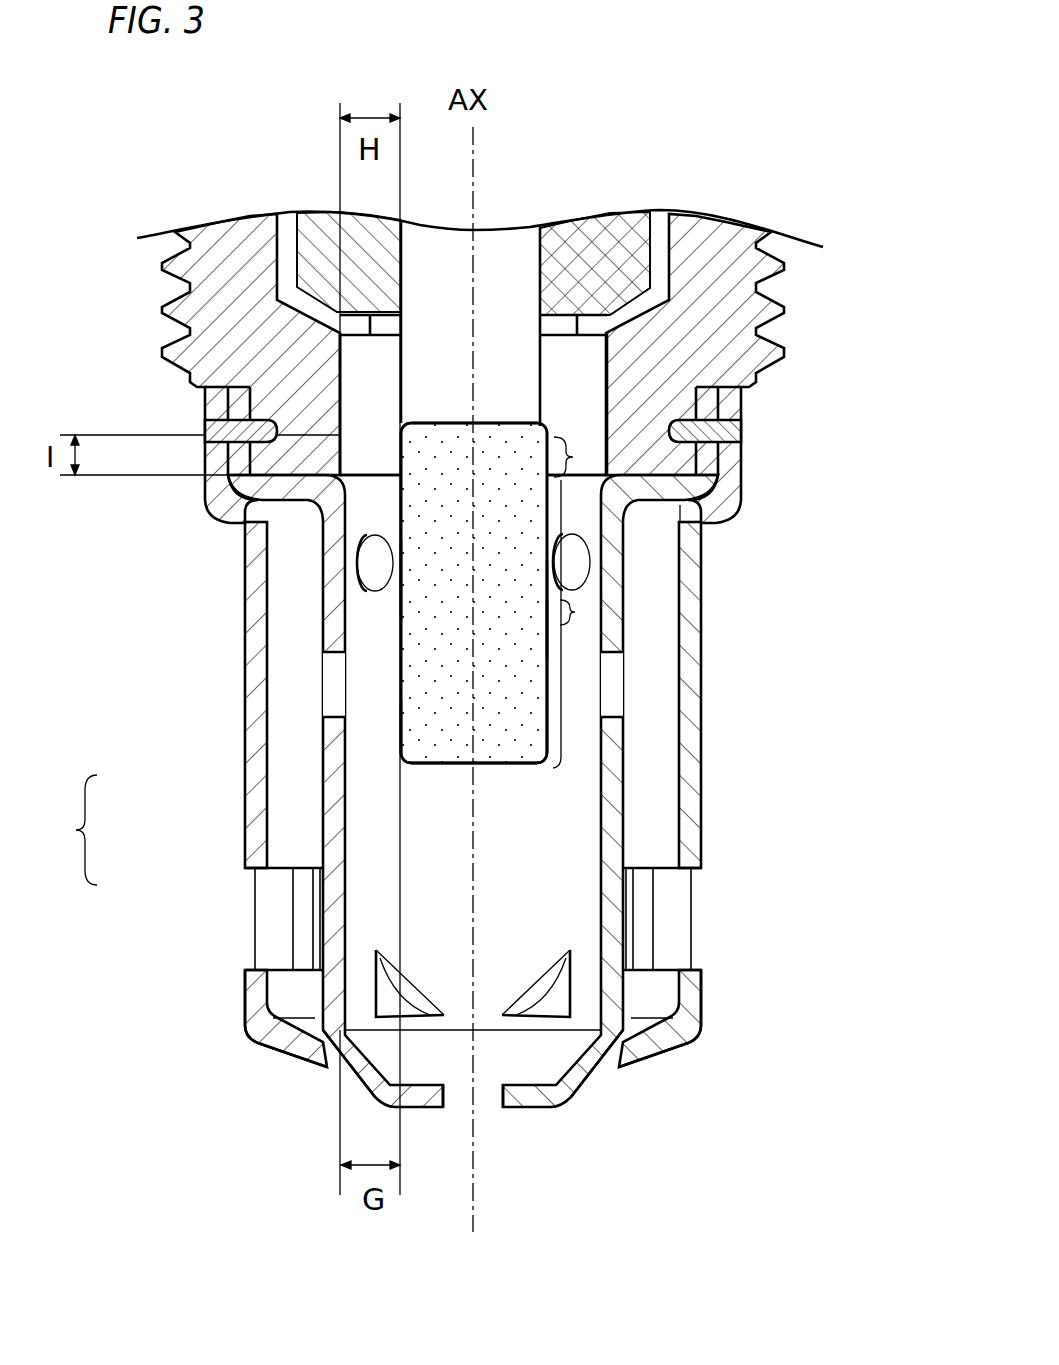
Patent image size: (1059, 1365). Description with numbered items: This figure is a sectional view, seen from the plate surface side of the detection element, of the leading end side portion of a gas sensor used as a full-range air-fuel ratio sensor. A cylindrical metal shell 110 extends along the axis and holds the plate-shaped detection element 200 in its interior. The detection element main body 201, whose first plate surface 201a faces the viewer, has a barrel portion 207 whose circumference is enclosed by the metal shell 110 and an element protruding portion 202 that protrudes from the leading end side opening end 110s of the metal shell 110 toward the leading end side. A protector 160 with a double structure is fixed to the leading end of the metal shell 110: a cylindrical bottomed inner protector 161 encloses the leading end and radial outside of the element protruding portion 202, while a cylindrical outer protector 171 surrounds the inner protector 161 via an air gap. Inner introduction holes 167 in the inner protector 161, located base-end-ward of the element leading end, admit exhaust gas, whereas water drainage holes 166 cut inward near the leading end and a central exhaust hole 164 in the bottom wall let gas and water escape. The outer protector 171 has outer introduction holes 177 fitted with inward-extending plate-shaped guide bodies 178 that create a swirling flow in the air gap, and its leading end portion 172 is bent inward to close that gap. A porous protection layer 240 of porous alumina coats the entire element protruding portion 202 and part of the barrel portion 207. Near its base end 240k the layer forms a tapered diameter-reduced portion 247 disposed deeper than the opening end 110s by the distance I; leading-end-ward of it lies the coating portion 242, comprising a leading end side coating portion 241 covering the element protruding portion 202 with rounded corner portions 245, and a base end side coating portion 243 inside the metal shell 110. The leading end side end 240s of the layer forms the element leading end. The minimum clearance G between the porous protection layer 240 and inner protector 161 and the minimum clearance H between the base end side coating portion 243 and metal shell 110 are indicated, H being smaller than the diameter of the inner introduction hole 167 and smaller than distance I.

The metal shell 110 is at (228, 270).
The leading end side opening end 110s is at (372, 497).
The protector 160 is at (363, 703).
The inner protector 161 is at (333, 770).
The outer protector 171 is at (253, 847).
The inner introduction hole 167 is at (342, 620).
The guide body 178 is at (277, 928).
The outer introduction hole 177 is at (247, 972).
The leading end portion of outer protector 172 is at (288, 1040).
The water drainage hole 166 is at (327, 1070).
The exhaust hole 164 is at (458, 1110).
The detection element 200 is at (490, 270).
The detection element main body 201 is at (525, 231).
The first plate surface 201a is at (487, 372).
The barrel portion 207 is at (437, 225).
The element protruding portion 202 is at (493, 583).
The porous protection layer 240 is at (505, 710).
The base end of porous protection layer 240k is at (505, 382).
The leading end side end of porous protection layer 240s is at (488, 765).
The leading end side coating portion 241 is at (568, 617).
The coating portion 242 is at (510, 655).
The base end side coating portion 243 is at (630, 510).
The corner portion 245 is at (543, 763).
The diameter-reduced portion 247 is at (712, 466).